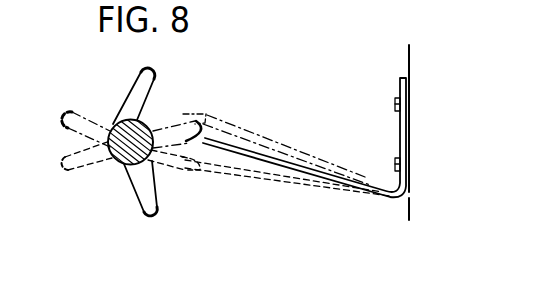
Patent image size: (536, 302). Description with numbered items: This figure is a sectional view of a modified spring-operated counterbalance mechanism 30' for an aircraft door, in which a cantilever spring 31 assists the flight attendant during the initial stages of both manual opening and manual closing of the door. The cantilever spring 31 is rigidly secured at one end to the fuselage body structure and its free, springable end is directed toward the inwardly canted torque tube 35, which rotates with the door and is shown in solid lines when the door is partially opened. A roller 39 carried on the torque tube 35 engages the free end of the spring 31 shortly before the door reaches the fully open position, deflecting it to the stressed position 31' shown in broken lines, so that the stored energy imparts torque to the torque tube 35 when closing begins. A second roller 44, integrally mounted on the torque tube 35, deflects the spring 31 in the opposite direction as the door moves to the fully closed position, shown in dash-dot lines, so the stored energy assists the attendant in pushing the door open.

The counterbalance mechanism 30' is at (305, 161).
The cantilever spring 31 is at (304, 137).
The deflected spring position 31' is at (287, 200).
The torque tube 35 is at (116, 126).
The roller 39 is at (70, 114).
The second roller 44 is at (222, 113).